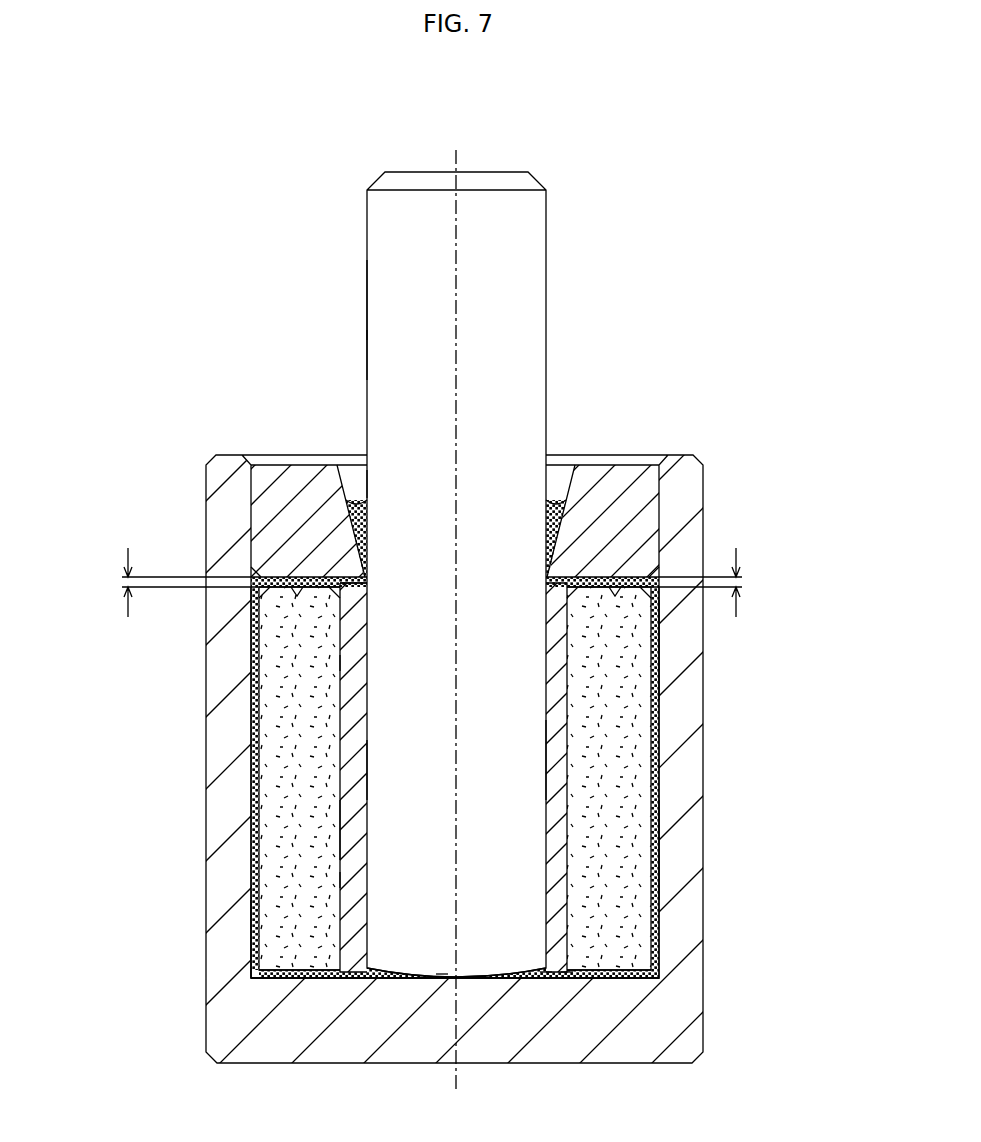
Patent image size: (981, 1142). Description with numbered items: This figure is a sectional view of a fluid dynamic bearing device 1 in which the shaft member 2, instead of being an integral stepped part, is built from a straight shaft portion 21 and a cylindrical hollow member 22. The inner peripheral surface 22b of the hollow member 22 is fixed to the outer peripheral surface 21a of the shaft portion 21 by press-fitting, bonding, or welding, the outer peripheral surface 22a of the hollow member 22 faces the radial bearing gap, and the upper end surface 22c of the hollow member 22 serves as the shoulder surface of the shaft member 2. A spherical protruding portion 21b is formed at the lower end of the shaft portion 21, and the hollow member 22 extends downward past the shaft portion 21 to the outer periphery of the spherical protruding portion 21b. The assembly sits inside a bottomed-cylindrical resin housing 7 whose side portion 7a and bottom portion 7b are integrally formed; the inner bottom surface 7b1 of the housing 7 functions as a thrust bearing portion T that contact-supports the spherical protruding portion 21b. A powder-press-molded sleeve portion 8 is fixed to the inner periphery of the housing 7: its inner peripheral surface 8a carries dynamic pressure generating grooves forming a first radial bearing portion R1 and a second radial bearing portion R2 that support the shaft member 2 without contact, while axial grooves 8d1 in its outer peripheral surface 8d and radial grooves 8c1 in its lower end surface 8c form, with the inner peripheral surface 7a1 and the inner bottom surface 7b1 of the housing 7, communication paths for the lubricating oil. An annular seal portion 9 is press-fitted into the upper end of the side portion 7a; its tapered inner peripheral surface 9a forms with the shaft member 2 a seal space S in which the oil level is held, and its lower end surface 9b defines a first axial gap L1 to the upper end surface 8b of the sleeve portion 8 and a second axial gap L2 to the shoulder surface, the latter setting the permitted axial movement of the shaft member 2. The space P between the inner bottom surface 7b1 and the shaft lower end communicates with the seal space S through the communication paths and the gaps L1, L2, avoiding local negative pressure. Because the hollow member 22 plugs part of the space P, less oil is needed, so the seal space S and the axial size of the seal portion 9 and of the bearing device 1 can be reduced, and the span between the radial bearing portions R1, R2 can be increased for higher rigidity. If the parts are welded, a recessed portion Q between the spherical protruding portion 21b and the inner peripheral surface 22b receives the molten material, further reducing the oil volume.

The fluid dynamic bearing device 1 is at (614, 177).
The shaft member 2 is at (560, 240).
The shaft portion 21 is at (387, 303).
The outer peripheral surface of shaft portion 21a is at (367, 350).
The spherical protruding portion 21b is at (382, 975).
The housing 7 is at (714, 808).
The side portion 7a is at (682, 847).
The inner peripheral surface of housing 7a1 is at (657, 678).
The bottom portion 7b is at (536, 1046).
The inner bottom surface of housing 7b1 is at (341, 972).
The sleeve portion 8 is at (620, 713).
The inner peripheral surface of sleeve portion 8a is at (567, 760).
The upper end surface of sleeve portion 8b is at (273, 576).
The lower end surface of sleeve portion 8c is at (279, 979).
The radial groove 8c1 is at (628, 978).
The outer peripheral surface of sleeve portion 8d is at (657, 895).
The axial groove 8d1 is at (252, 946).
The seal portion 9 is at (640, 530).
The inner peripheral surface of seal portion 9a is at (567, 487).
The lower end surface of seal portion 9b is at (313, 590).
The hollow member 22 is at (340, 722).
The outer peripheral surface of hollow member 22a is at (343, 825).
The inner peripheral surface of hollow member 22b is at (364, 748).
The upper end surface of hollow member 22c is at (353, 573).
The seal space S is at (346, 481).
The first radial bearing portion R1 is at (329, 668).
The second radial bearing portion R2 is at (329, 885).
The first axial gap L1 is at (228, 582).
The second axial gap L2 is at (661, 582).
The thrust bearing portion T is at (433, 969).
The recessed portion Q is at (537, 973).
The space P is at (563, 978).